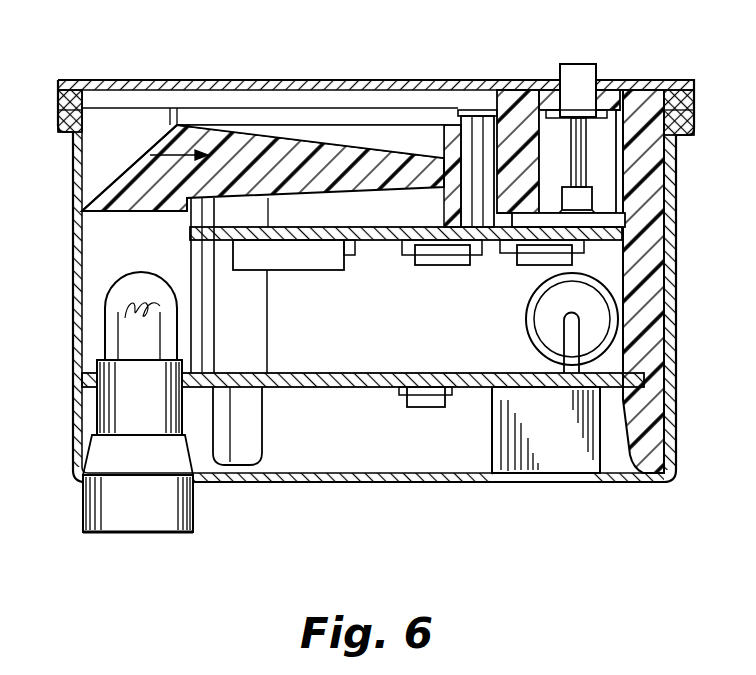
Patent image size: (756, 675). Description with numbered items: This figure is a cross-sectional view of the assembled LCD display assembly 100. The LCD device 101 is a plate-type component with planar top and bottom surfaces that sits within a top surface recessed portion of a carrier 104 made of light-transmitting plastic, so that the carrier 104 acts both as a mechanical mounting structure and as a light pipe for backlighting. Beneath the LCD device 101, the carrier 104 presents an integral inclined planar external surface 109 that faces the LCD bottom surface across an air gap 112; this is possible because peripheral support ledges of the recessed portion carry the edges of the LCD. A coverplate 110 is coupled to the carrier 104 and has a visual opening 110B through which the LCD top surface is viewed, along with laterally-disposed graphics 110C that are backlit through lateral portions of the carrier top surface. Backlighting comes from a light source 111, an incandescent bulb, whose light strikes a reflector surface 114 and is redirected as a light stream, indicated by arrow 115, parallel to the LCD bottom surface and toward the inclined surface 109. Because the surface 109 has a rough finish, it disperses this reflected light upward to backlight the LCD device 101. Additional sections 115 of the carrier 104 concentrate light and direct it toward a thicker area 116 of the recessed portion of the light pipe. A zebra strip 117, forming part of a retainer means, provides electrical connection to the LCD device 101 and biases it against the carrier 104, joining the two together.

The LCD display assembly 100 is at (370, 279).
The LCD device 101 is at (300, 113).
The carrier 104 is at (660, 221).
The inclined planar external surface 109 is at (355, 152).
The coverplate 110 is at (72, 80).
The visual opening 110B is at (215, 80).
The graphics 110C is at (509, 80).
The light source 111 is at (104, 300).
The air gap 112 is at (378, 135).
The reflector surface 114 is at (104, 174).
The reflected light stream / additional carrier sections 115 is at (153, 147).
The thicker area of the recessed portion 116 is at (128, 211).
The zebra strip 117 is at (526, 88).